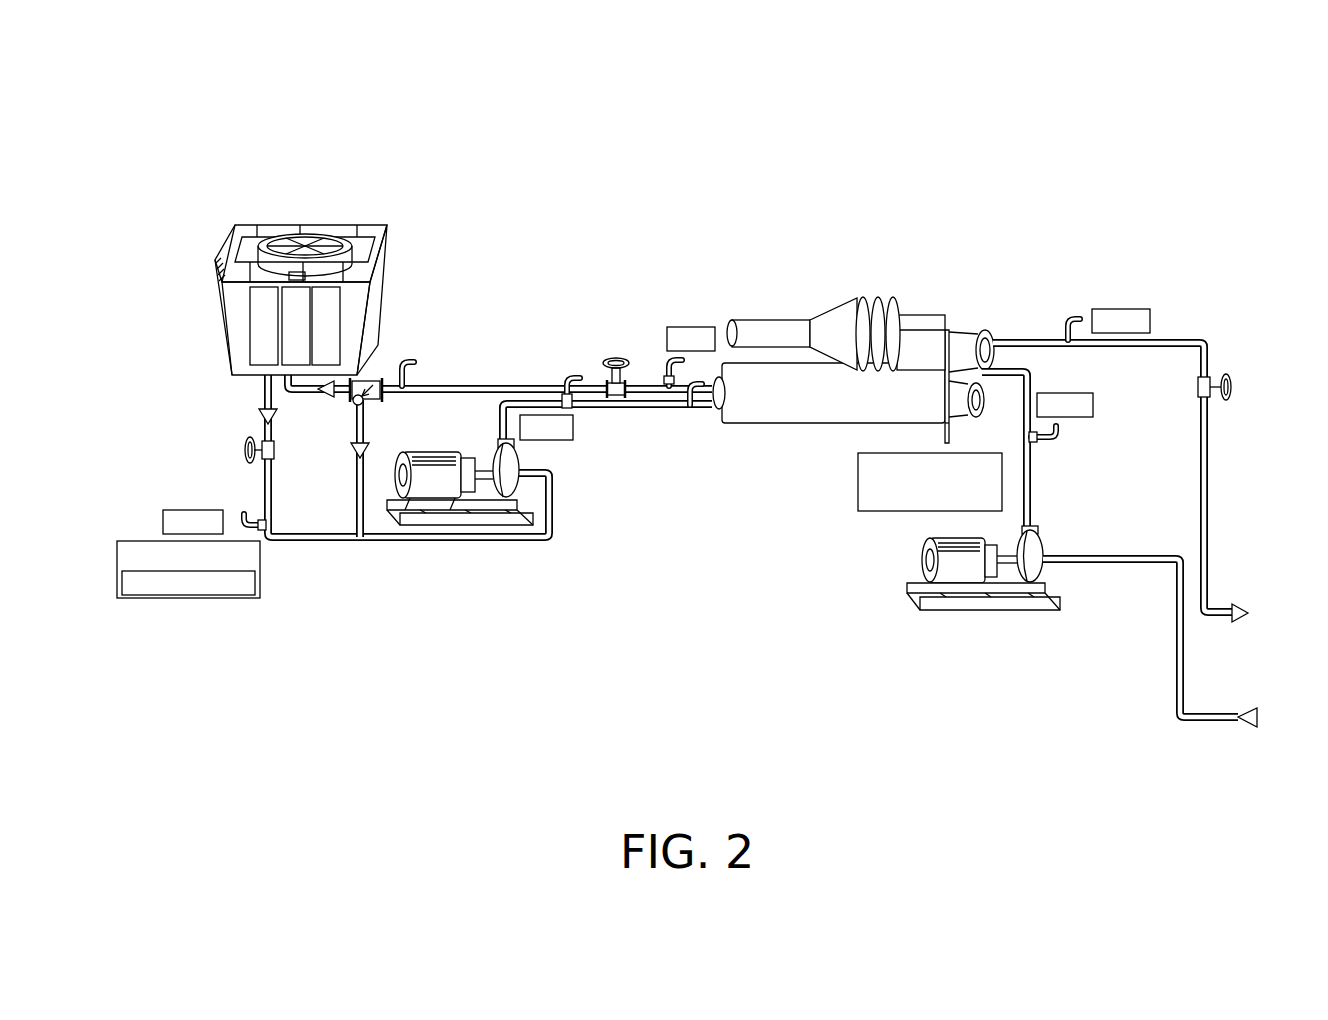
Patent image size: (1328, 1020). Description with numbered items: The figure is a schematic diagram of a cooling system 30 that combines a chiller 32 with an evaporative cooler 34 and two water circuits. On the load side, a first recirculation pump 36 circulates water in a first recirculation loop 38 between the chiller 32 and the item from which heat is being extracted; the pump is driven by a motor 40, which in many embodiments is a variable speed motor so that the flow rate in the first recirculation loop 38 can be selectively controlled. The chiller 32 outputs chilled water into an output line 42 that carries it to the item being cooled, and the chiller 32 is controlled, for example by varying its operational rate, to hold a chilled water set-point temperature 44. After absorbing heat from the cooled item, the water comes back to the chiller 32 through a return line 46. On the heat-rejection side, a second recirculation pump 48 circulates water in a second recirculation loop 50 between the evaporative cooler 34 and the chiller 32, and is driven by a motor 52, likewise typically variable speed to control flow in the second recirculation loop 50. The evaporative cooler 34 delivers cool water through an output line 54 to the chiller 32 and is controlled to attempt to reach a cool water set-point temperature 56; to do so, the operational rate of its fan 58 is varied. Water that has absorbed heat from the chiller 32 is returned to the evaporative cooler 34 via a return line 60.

The cooling system 30 is at (873, 289).
The chiller 32 is at (963, 314).
The evaporative cooler 34 is at (377, 229).
The first recirculation pump 36 is at (973, 491).
The first recirculation loop 38 is at (1147, 433).
The motor 40 is at (923, 543).
The output line 42 is at (1028, 338).
The chilled water set-point temperature 44 is at (887, 512).
The return line 46 is at (1206, 716).
The second recirculation pump 48 is at (513, 464).
The second recirculation loop 50 is at (439, 484).
The motor 52 is at (420, 452).
The output line 54 is at (318, 540).
The cool water set-point temperature 56 is at (193, 598).
The fan 58 is at (312, 240).
The return line 60 is at (571, 380).